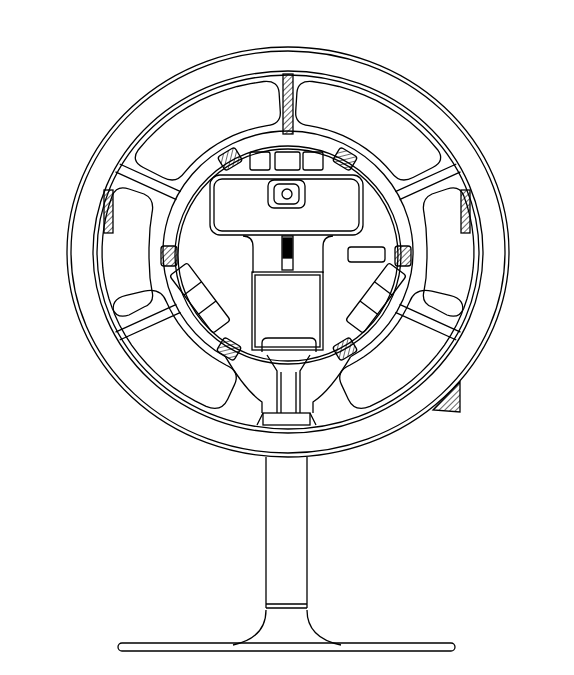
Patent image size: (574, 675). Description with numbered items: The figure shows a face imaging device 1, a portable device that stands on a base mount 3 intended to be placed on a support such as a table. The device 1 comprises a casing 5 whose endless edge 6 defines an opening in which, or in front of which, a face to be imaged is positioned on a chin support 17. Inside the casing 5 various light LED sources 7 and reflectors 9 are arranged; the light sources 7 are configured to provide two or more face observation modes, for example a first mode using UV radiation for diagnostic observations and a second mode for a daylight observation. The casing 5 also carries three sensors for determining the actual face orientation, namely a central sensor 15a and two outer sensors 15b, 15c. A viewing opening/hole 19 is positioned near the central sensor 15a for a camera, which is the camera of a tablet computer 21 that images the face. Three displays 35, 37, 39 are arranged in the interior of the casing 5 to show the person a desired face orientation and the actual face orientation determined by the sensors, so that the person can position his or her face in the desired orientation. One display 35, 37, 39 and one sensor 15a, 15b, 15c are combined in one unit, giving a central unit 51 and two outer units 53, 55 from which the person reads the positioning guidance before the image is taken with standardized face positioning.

The face imaging device 1 is at (517, 113).
The base mount 3 is at (290, 552).
The casing 5 is at (397, 413).
The endless edge 6 is at (300, 77).
The light LED sources 7 is at (412, 243).
The reflectors 9 is at (375, 118).
The central sensor 15a is at (288, 266).
The outer sensor 15b is at (472, 229).
The outer sensor 15c is at (107, 230).
The chin support 17 is at (300, 355).
The viewing opening/hole 19 is at (303, 186).
The tablet computer 21 is at (457, 408).
The display 35 is at (285, 245).
The display 37 is at (110, 228).
The display 39 is at (465, 198).
The central unit 51 is at (253, 265).
The outer unit 53 is at (465, 257).
The outer unit 55 is at (123, 250).